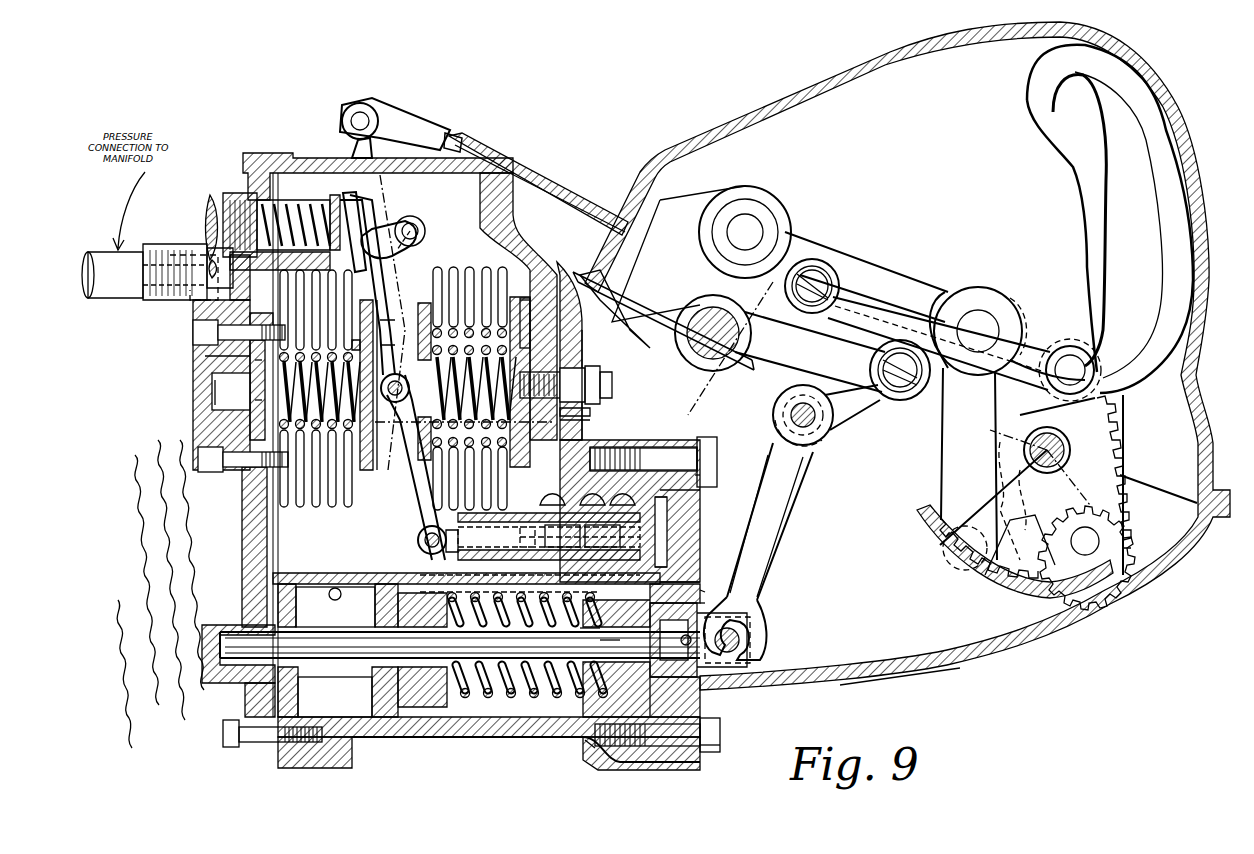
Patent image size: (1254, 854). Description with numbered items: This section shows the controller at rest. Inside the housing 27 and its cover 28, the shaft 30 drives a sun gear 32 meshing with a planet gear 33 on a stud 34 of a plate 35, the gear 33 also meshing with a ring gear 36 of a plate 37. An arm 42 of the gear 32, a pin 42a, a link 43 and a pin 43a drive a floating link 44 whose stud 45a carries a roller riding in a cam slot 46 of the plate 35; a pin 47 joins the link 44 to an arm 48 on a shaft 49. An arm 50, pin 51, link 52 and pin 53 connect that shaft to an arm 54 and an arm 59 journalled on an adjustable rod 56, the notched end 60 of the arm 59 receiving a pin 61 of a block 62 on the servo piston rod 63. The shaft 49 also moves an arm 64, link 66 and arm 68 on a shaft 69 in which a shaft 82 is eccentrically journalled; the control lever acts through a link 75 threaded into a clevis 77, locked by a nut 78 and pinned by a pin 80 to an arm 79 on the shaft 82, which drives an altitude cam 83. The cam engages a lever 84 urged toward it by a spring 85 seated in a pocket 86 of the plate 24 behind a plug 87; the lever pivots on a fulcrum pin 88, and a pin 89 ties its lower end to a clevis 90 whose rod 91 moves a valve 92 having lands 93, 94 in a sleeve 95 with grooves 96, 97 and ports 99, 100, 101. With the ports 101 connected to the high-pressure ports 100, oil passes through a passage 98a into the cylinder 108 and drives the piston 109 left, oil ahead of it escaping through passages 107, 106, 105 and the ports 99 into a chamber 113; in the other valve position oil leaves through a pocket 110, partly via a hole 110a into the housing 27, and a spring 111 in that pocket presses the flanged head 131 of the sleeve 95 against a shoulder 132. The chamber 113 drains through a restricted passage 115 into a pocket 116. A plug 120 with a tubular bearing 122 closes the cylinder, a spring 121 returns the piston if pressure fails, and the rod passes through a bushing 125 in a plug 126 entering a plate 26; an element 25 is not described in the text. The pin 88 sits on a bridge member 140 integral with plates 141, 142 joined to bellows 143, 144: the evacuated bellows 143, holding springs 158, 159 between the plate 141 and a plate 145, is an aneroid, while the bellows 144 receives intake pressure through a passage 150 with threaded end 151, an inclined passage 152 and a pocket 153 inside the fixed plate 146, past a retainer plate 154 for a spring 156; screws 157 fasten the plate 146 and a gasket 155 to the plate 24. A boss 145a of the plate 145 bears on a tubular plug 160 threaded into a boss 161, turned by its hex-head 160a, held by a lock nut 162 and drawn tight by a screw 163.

The plate 24 is at (242, 516).
The bolt 25 is at (715, 455).
The plate 26 is at (700, 755).
The housing 27 is at (958, 664).
The cover 28 is at (1208, 240).
The shaft 30 is at (1068, 448).
The sun gear 32 is at (1118, 424).
The planet gear 33 is at (1112, 523).
The stud 34 is at (1095, 541).
The plate 35 is at (1027, 84).
The ring gear 36 is at (932, 520).
The plate 37 is at (942, 503).
The arm 42 is at (997, 546).
The pin 42a is at (968, 525).
The link 43 is at (940, 450).
The pin 43a is at (980, 330).
The floating link 44 is at (932, 283).
The stud 45a is at (1076, 360).
The cam slot 46 is at (1097, 140).
The pin 47 is at (745, 232).
The arm 48 is at (692, 268).
The shaft 49 is at (712, 333).
The arm 50 is at (800, 322).
The pin 51 is at (832, 282).
The link 52 is at (865, 306).
The pin 53 is at (900, 385).
The arm 54 is at (853, 420).
The rod 56 is at (795, 405).
The arm 59 is at (782, 528).
The notched end 60 is at (760, 615).
The pin 61 is at (742, 636).
The block 62 is at (750, 660).
The piston rod 63 is at (708, 612).
The arm 64 is at (703, 395).
The link 66 is at (465, 434).
The arm 68 is at (405, 263).
The shaft 69 is at (418, 230).
The link 75 is at (576, 190).
The clevis 77 is at (432, 120).
The nut 78 is at (462, 143).
The arm 79 is at (352, 145).
The pin 80 is at (348, 110).
The shaft 82 is at (420, 233).
The cam 83 is at (395, 233).
The lever 84 is at (352, 228).
The spring 85 is at (282, 205).
The pocket 86 is at (312, 207).
The plug 87 is at (212, 198).
The fulcrum pin 88 is at (394, 331).
The pin 89 is at (420, 540).
The clevis 90 is at (447, 529).
The rod 91 is at (483, 528).
The valve 92 is at (680, 510).
The land 93 is at (510, 584).
The land 94 is at (585, 640).
The valve sleeve 95 is at (700, 500).
The annular groove 96 is at (564, 492).
The annular groove 97 is at (607, 490).
The passage 98a is at (560, 635).
The ports 99 is at (549, 535).
The ports 100 is at (569, 536).
The ports 101 is at (604, 535).
The passage 105 is at (460, 606).
The passage 106 is at (497, 564).
The passage 107 is at (346, 577).
The cylinder 108 is at (580, 690).
The piston 109 is at (430, 710).
The pocket 110 is at (660, 560).
The hole 110a is at (670, 520).
The spring 111 is at (672, 540).
The chamber 113 is at (272, 548).
The restricted passage 115 is at (276, 556).
The pocket 116 is at (222, 675).
The plug 120 is at (315, 700).
The spring 121 is at (485, 700).
The tubular bearing 122 is at (378, 717).
The bushing 125 is at (560, 737).
The plug 126 is at (600, 748).
The flanged head 131 is at (700, 590).
The shoulder 132 is at (700, 603).
The bridge member 140 is at (392, 440).
The plate 141 is at (385, 225).
The plate 142 is at (369, 409).
The bellows 143 is at (480, 260).
The bellows 144 is at (318, 531).
The plate 145 is at (562, 268).
The boss 145a is at (663, 321).
The plate 146 is at (240, 478).
The horizontal passage 150 is at (135, 279).
The threaded end 151 is at (165, 252).
The inclined passage 152 is at (218, 308).
The pocket 153 is at (215, 388).
The plate 154 is at (268, 372).
The gasket 155 is at (208, 361).
The spring 156 is at (268, 390).
The screws 157 is at (193, 334).
The spring 158 is at (535, 345).
The spring 159 is at (532, 318).
The tubular plug 160 is at (582, 360).
The hex-head 160a is at (598, 372).
The tubular boss 161 is at (615, 283).
The lock nut 162 is at (600, 408).
The screw 163 is at (605, 385).